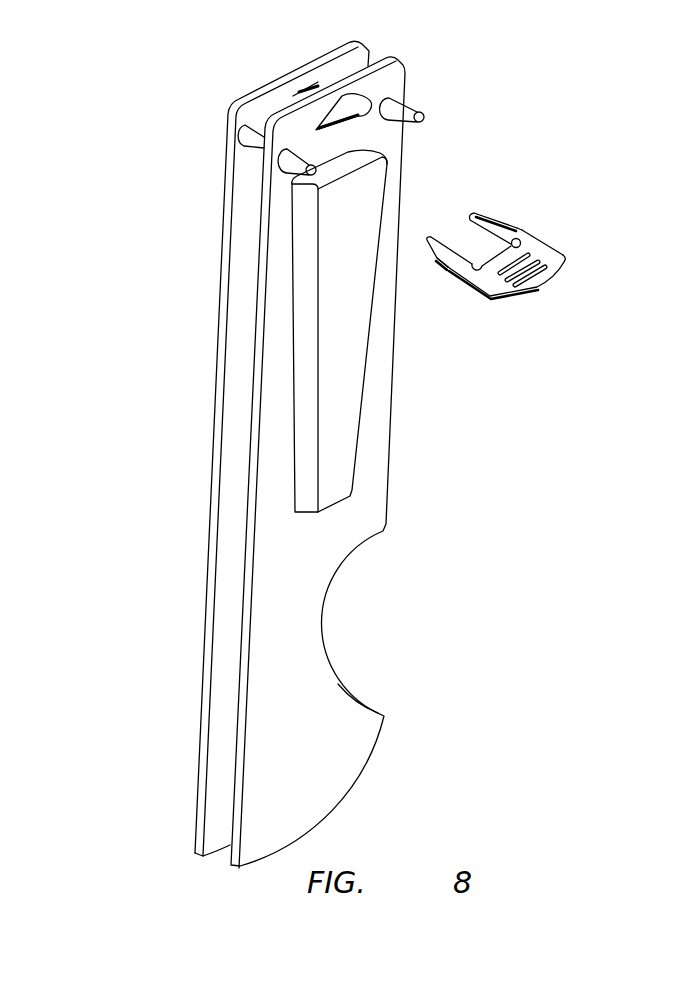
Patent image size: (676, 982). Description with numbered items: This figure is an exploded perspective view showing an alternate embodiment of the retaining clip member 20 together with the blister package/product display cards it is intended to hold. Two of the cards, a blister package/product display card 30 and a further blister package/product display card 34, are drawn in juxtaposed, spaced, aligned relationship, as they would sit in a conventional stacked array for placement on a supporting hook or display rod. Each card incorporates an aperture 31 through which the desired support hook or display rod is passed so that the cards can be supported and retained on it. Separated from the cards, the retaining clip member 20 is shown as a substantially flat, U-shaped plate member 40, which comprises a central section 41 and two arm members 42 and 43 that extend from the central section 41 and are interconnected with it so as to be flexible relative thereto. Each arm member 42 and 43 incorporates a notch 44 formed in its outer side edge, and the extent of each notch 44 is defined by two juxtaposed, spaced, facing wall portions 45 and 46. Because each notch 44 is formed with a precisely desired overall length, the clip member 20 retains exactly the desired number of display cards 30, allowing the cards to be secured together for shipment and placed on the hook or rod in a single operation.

The retaining clip member 20 is at (538, 242).
The blister package/product display card 30 is at (345, 742).
The aperture 31 is at (305, 88).
The blister package/product display card 34 is at (205, 637).
The U-shaped plate member 40 is at (524, 242).
The central section 41 is at (497, 288).
The arm member 42 is at (442, 258).
The arm member 43 is at (488, 213).
The notch 44 is at (522, 230).
The wall portion 45 is at (515, 238).
The wall portion 46 is at (527, 232).